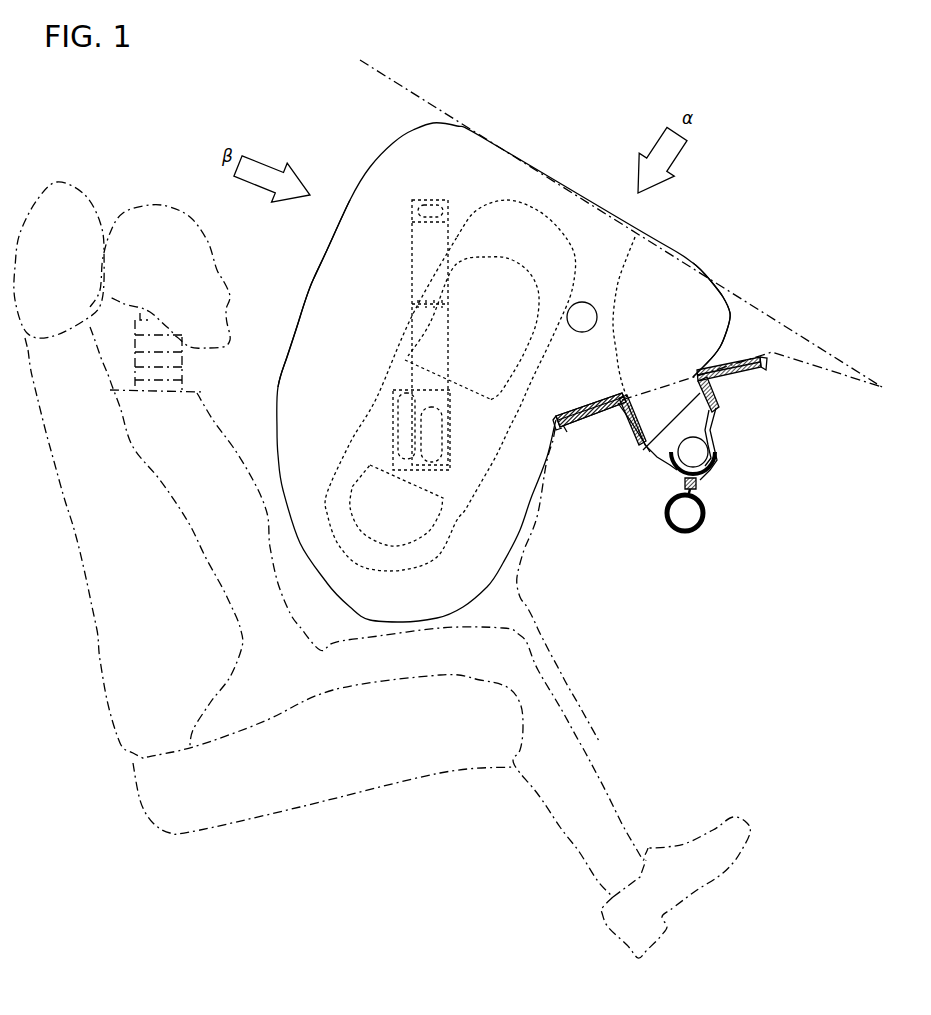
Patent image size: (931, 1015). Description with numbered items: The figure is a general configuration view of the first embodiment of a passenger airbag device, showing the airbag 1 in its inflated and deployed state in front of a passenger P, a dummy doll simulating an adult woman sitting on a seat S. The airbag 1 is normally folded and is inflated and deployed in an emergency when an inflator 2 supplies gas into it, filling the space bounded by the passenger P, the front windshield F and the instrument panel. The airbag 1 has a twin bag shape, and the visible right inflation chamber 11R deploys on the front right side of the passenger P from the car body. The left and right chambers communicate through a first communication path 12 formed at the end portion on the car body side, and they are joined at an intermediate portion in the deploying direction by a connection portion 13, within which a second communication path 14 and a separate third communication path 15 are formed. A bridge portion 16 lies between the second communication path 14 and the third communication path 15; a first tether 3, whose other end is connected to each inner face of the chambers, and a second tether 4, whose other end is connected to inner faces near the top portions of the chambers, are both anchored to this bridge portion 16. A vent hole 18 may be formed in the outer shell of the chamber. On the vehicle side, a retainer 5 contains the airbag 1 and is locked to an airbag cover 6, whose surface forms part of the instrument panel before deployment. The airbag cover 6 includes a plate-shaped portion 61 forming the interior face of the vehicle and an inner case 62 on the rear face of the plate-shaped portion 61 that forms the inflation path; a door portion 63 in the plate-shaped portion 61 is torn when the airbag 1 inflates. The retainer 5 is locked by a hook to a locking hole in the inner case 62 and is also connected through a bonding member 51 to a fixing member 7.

The airbag 1 is at (333, 130).
The inflator 2 is at (717, 457).
The first tether 3 is at (393, 393).
The second tether 4 is at (412, 270).
The retainer 5 is at (717, 422).
The airbag cover 6 is at (583, 425).
The fixing member 7 is at (705, 513).
The right inflation chamber 11R is at (312, 278).
The first communication path 12 is at (672, 294).
The connection portion 13 is at (543, 213).
The second communication path 14 is at (473, 328).
The third communication path 15 is at (396, 505).
The bridge portion 16 is at (472, 398).
The vent hole 18 is at (581, 333).
The bonding member 51 is at (687, 485).
The plate-shaped portion 61 is at (745, 374).
The inner case 62 is at (628, 427).
The door portion 63 is at (735, 354).
The passenger P is at (157, 203).
The seat S is at (70, 512).
The front windshield F is at (770, 314).